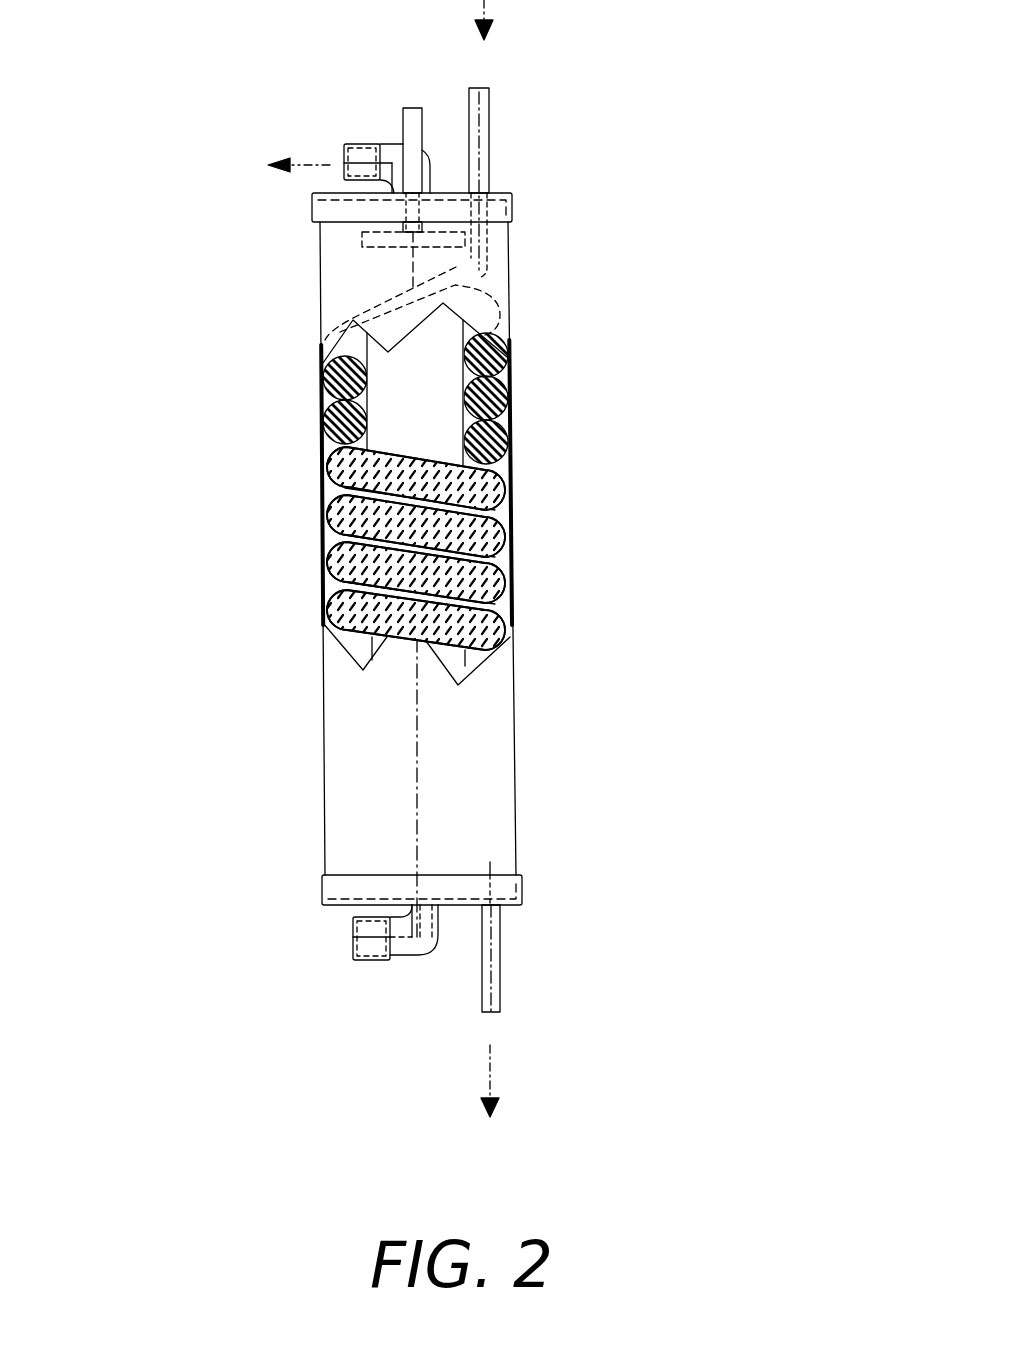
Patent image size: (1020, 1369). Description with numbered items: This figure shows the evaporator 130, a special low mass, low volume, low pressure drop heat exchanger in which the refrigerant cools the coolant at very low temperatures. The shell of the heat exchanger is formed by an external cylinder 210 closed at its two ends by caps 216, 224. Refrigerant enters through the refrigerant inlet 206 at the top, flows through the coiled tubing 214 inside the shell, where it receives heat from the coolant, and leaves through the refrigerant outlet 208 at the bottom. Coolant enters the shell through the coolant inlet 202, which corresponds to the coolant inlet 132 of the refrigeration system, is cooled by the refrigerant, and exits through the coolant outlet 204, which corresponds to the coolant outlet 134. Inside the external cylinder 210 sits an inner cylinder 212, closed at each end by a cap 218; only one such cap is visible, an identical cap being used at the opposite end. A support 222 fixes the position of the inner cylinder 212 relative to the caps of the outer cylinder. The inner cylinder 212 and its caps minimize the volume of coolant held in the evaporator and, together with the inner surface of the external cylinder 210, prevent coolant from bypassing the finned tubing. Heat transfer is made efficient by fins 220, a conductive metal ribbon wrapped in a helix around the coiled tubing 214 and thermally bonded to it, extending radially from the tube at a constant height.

The evaporator 130 is at (773, 274).
The coolant inlet 132 is at (352, 945).
The coolant outlet 134 is at (344, 160).
The coolant inlet 202 is at (314, 981).
The coolant outlet 204 is at (291, 124).
The refrigerant inlet 206 is at (480, 88).
The refrigerant outlet 208 is at (498, 975).
The external cylinder 210 is at (323, 560).
The inner cylinder 212 is at (370, 648).
The coiled tubing 214 is at (405, 278).
The cap 216 is at (512, 210).
The cap 218 is at (362, 241).
The fins 220 is at (510, 500).
The support 222 is at (403, 108).
The cap 224 is at (520, 885).